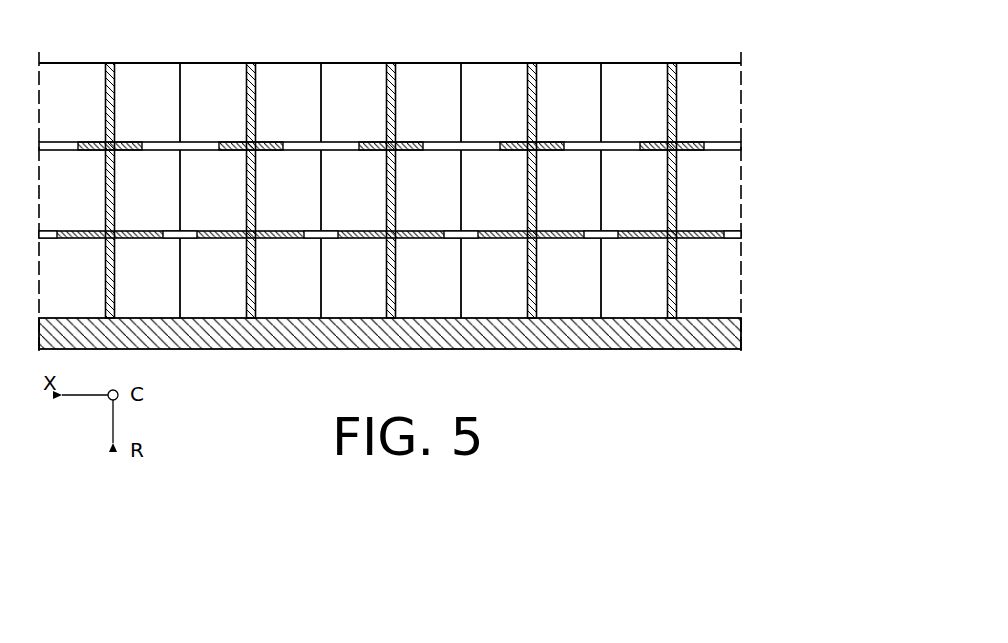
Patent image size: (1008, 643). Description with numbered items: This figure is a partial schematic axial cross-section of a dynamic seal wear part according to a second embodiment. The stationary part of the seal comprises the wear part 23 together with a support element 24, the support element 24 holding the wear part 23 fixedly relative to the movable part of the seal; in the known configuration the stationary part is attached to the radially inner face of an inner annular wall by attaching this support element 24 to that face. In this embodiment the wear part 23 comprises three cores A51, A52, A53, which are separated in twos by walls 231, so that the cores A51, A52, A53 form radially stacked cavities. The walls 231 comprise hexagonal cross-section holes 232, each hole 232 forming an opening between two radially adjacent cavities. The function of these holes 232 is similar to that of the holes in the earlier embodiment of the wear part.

The wear part 23 is at (779, 51).
The wall 231 is at (689, 144).
The hexagonal cross-section hole 232 is at (623, 143).
The support element 24 is at (720, 332).
The core A51 is at (758, 98).
The core A52 is at (756, 183).
The core A53 is at (758, 273).